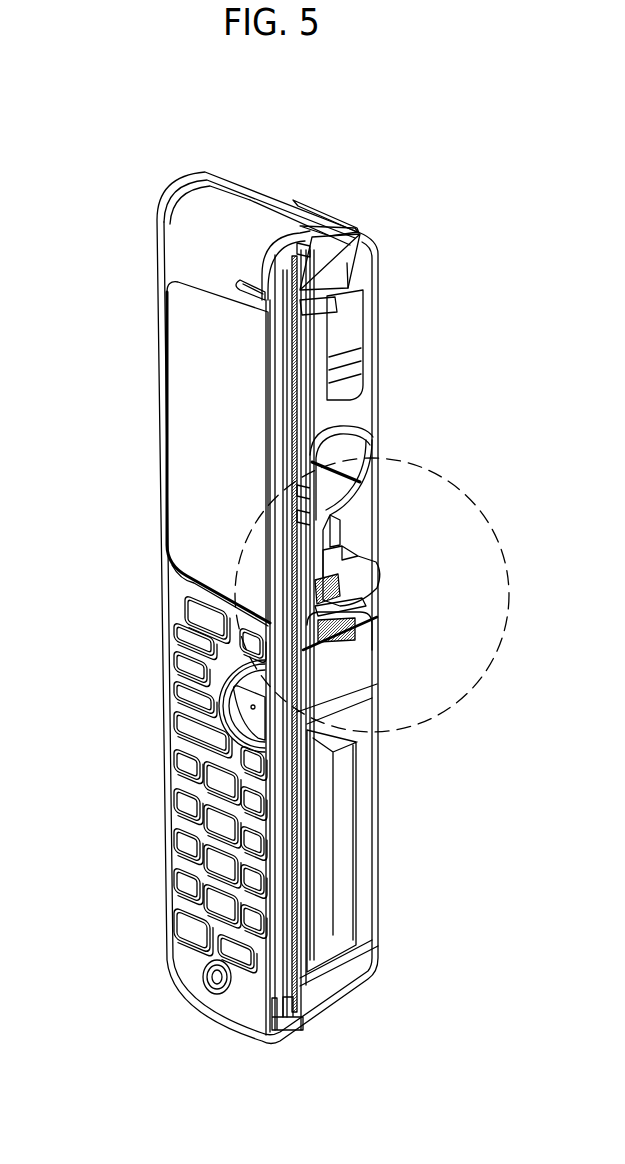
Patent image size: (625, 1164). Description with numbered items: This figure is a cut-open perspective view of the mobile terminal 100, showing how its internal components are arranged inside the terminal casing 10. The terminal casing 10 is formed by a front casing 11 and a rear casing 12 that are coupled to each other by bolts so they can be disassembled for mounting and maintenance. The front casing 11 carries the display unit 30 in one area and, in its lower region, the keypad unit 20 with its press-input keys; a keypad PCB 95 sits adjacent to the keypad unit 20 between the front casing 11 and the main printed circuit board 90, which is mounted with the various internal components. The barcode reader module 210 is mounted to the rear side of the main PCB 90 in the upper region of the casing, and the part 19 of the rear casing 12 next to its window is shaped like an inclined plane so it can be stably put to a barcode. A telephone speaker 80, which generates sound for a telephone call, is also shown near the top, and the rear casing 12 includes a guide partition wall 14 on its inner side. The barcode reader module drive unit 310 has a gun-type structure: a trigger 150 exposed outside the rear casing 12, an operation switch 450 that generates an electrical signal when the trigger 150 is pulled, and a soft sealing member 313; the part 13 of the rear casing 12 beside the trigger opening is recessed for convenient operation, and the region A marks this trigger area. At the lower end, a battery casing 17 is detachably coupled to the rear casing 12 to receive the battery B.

The mobile terminal 100 is at (80, 118).
The terminal casing 10 is at (276, 104).
The front casing 11 is at (207, 193).
The rear casing 12 is at (237, 180).
The part of the rear casing 19 is at (287, 192).
The display unit 30 is at (188, 456).
The keypad unit 20 is at (158, 598).
The telephone speaker 80 is at (358, 233).
The barcode reader module 210 is at (347, 263).
The guide partition wall 14 is at (345, 337).
The barcode reader module drive unit 310 is at (332, 465).
The part of the rear casing 13 is at (360, 496).
The trigger 150 is at (378, 568).
The operation switch 450 is at (368, 606).
The soft sealing member 313 is at (348, 634).
The battery casing 17 is at (372, 786).
The battery B is at (344, 838).
The enlarged region A is at (465, 492).
The main printed circuit board 90 is at (296, 992).
The keypad PCB 95 is at (292, 987).